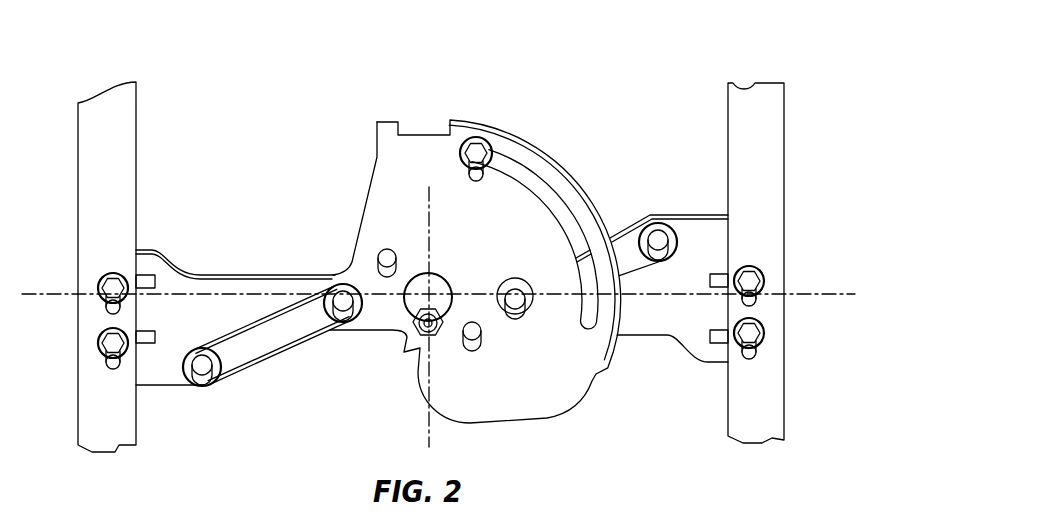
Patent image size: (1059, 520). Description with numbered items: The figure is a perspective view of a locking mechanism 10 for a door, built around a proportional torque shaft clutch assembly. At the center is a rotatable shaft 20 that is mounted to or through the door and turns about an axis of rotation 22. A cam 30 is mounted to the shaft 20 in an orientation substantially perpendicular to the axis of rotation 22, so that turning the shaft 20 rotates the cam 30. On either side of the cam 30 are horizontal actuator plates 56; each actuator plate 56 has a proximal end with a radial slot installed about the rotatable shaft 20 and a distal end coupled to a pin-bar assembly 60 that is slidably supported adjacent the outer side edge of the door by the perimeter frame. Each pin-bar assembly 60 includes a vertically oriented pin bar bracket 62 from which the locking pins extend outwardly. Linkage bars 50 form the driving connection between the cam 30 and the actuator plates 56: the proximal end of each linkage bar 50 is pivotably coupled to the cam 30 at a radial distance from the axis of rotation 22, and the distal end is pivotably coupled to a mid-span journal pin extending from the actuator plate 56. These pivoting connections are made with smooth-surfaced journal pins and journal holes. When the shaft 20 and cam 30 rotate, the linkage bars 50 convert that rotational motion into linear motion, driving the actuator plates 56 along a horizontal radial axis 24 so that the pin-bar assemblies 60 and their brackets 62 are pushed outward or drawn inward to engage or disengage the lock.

The locking mechanism 10 is at (641, 77).
The rotatable shaft 20 is at (410, 336).
The axis of rotation 22 is at (431, 428).
The horizontal radial axis 24 is at (825, 294).
The cam 30 is at (388, 185).
The linkage bar 50 is at (278, 325).
The actuator plate 56 is at (155, 372).
The pin-bar assembly 60 is at (66, 359).
The pin bar bracket 62 is at (92, 124).